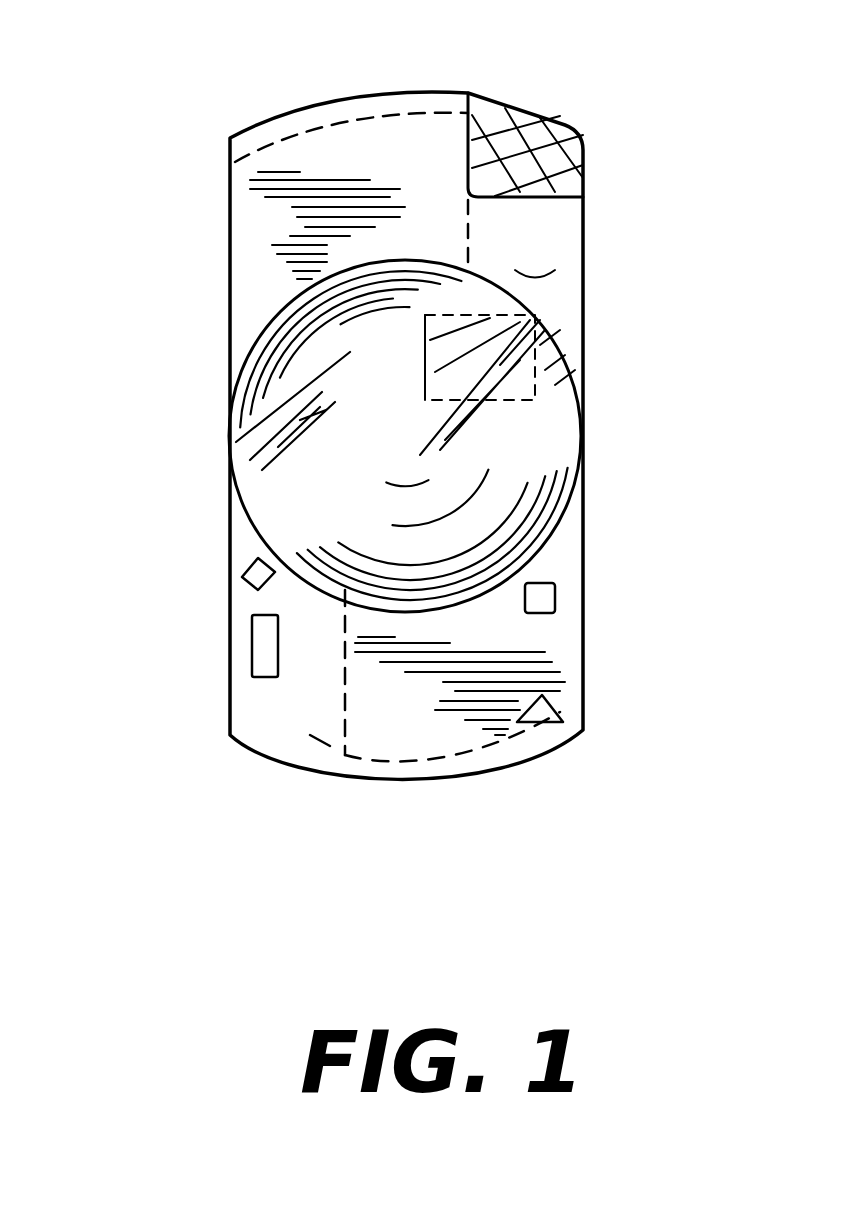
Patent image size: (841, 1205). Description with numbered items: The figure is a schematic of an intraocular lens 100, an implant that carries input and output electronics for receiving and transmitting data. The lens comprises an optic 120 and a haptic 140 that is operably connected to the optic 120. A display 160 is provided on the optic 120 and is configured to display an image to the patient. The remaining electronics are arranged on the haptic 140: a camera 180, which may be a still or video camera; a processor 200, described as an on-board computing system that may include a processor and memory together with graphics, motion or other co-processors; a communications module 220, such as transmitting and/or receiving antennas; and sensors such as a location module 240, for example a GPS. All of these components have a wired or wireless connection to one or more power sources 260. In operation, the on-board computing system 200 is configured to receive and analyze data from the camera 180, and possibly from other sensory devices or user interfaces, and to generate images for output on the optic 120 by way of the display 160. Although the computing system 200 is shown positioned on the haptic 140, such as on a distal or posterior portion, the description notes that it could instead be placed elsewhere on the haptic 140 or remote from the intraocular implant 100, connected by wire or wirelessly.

The intraocular lens 100 is at (228, 338).
The optic 120 is at (228, 445).
The haptic 140 is at (293, 154).
The display 160 is at (530, 338).
The camera 180 is at (555, 593).
The processor 200 is at (520, 727).
The communications module 220 is at (252, 645).
The location module 240 is at (243, 576).
The power source 260 is at (585, 148).